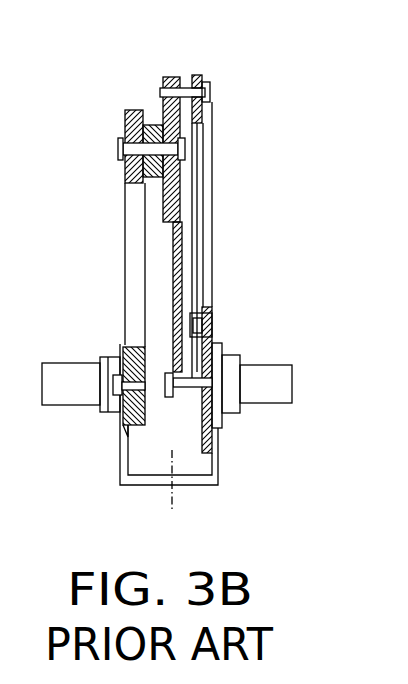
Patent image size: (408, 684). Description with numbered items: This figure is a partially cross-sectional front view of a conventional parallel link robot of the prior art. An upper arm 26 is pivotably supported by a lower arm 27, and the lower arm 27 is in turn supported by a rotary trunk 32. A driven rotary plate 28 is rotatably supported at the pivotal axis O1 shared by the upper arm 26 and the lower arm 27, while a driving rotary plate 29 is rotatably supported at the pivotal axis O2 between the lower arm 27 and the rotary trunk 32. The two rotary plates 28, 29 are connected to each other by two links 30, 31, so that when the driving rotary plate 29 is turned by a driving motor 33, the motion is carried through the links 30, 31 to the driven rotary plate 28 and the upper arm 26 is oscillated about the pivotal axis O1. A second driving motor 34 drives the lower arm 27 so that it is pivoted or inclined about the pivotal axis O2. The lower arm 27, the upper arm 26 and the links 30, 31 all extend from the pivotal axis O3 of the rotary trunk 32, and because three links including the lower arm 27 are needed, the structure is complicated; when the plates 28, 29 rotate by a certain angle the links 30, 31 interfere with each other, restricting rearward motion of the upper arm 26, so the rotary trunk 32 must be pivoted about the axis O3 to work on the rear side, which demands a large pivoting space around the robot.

The upper arm 26 is at (153, 125).
The lower arm 27 is at (125, 243).
The driven rotary plate 28 is at (168, 76).
The driving rotary plate 29 is at (215, 335).
The link 30 is at (182, 233).
The link 31 is at (212, 262).
The rotary trunk 32 is at (118, 440).
The driving motor 33 is at (268, 404).
The driving motor 34 is at (67, 372).
The pivotal axis O1 is at (116, 147).
The pivotal axis O2 is at (192, 392).
The pivotal axis O3 is at (170, 505).